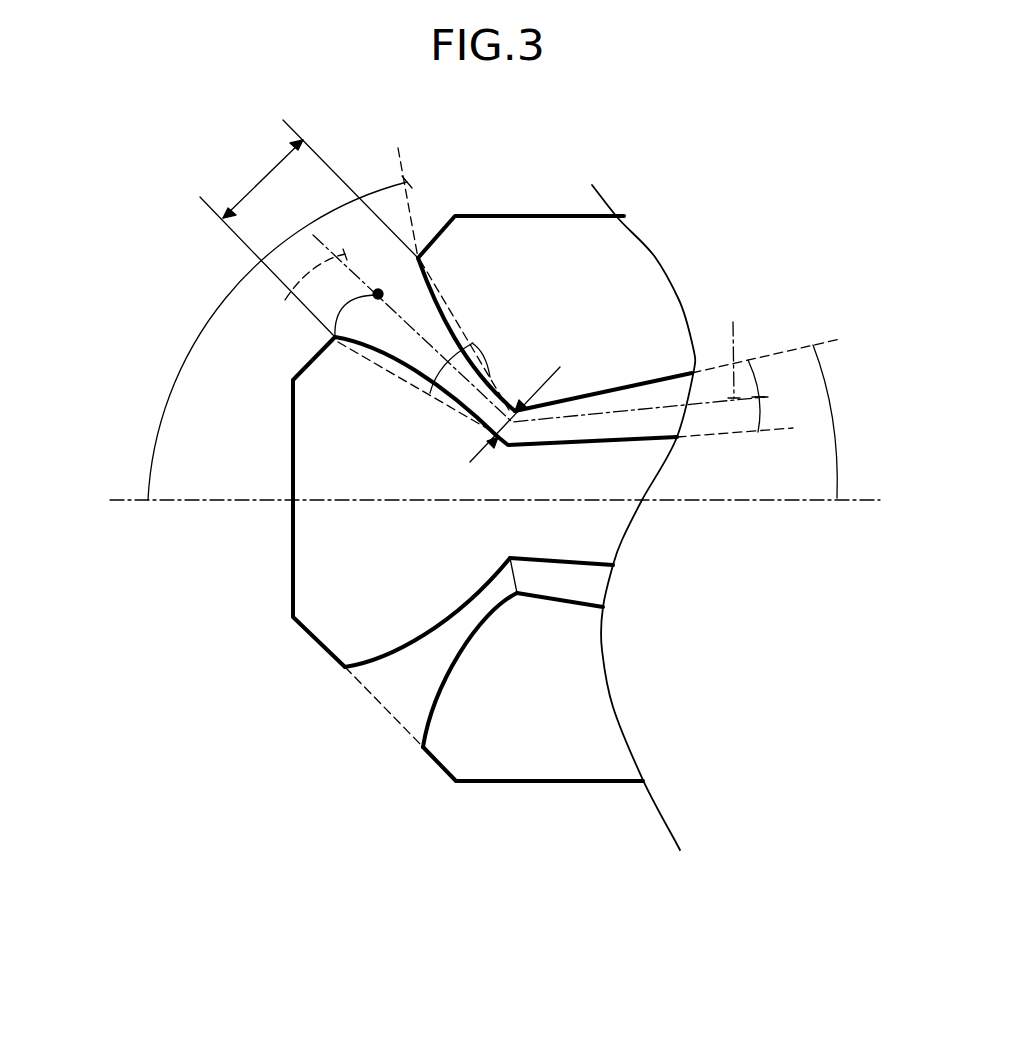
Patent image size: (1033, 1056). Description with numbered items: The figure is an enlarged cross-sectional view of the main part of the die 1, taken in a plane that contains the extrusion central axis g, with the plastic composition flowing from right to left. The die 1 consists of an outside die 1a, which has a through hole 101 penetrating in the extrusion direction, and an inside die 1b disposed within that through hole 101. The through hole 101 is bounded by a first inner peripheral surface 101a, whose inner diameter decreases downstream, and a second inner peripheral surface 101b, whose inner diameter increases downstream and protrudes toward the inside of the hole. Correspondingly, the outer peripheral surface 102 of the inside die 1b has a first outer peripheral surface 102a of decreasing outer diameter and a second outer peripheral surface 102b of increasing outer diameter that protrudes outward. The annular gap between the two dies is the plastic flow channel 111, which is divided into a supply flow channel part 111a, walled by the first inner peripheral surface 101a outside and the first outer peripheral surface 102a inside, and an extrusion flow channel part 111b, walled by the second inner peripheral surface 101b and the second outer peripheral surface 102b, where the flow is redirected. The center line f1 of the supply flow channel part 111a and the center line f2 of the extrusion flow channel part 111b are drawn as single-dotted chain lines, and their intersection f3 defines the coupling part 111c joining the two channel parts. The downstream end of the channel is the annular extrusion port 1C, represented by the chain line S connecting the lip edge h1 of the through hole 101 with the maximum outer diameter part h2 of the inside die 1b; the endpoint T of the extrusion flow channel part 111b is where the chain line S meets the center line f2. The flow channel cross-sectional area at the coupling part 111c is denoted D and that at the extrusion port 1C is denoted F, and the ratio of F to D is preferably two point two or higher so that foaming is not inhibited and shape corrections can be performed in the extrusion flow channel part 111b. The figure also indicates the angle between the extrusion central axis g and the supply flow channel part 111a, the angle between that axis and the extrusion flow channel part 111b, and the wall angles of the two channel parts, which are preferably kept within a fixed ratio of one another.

The die 1 is at (345, 872).
The outside die 1a is at (440, 767).
The inside die 1b is at (310, 650).
The extrusion port 1C is at (368, 700).
The through hole 101 is at (725, 200).
The first inner peripheral surface 101a is at (615, 398).
The second inner peripheral surface 101b is at (483, 385).
The outer peripheral surface 102 is at (200, 525).
The first outer peripheral surface 102a is at (520, 448).
The second outer peripheral surface 102b is at (470, 395).
The plastic flow channel 111 is at (625, 848).
The supply flow channel part 111a is at (567, 580).
The extrusion flow channel part 111b is at (487, 605).
The coupling part 111c is at (513, 587).
The lip edge h1 is at (423, 747).
The maximum outer diameter part h2 is at (345, 667).
The flow channel cross-sectional area at the extrusion port F is at (309, 228).
The chain line S is at (402, 272).
The endpoint of the extrusion flow channel part T is at (335, 337).
The flow channel cross-sectional area at the coupling part D is at (515, 426).
The center line of the supply flow channel part f1 is at (746, 348).
The center line of the extrusion flow channel part f2 is at (297, 293).
The intersection f3 is at (584, 375).
The extrusion central axis g is at (485, 499).